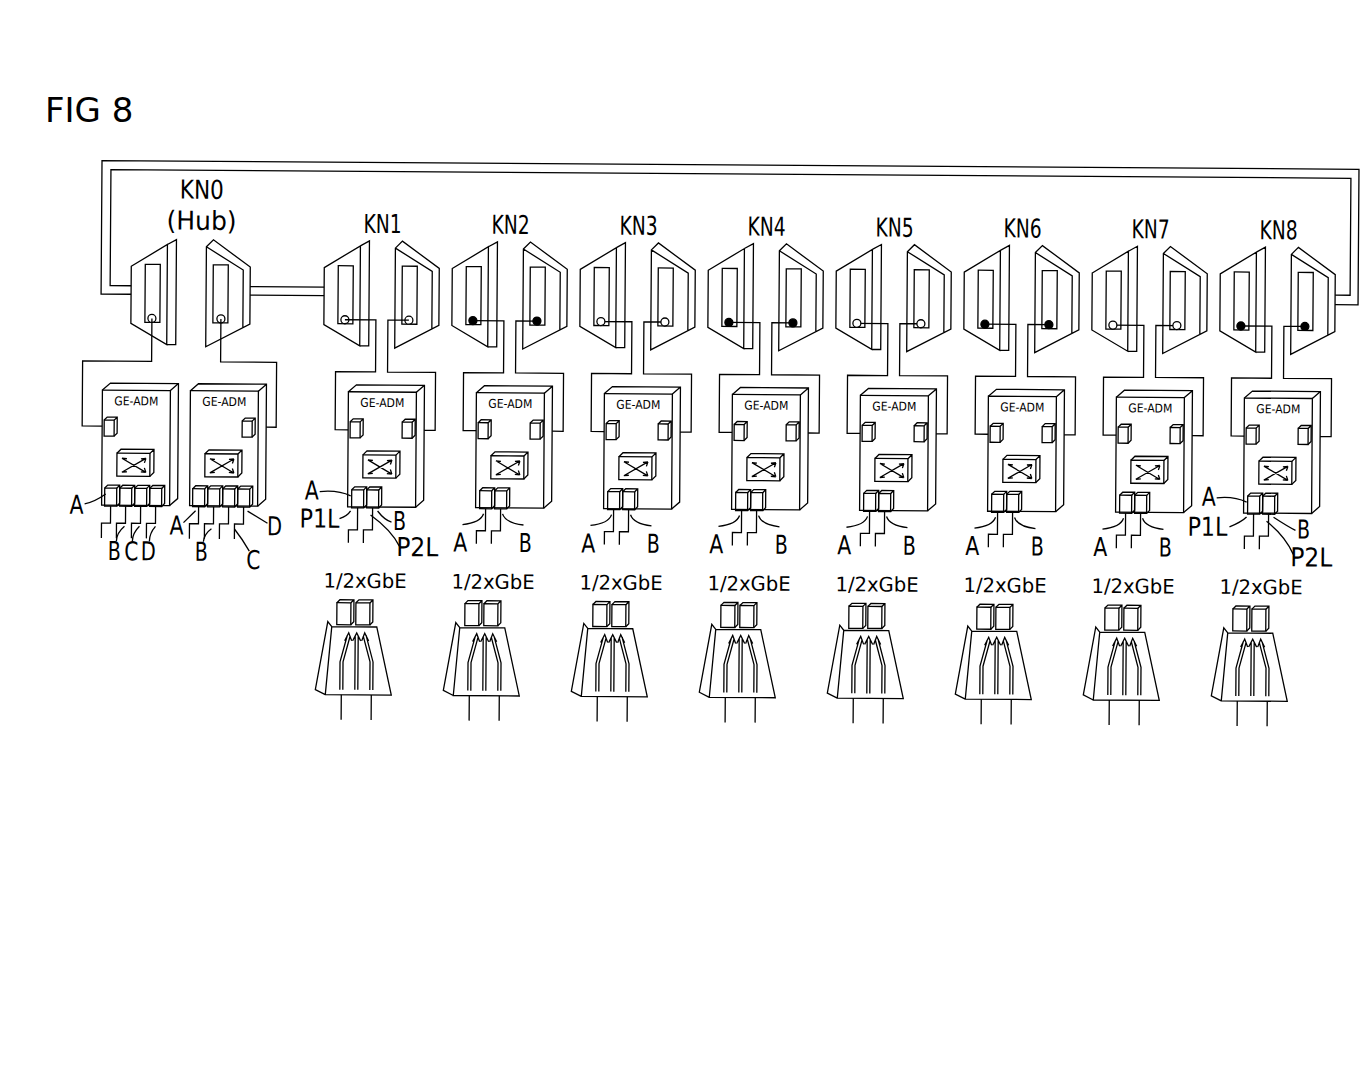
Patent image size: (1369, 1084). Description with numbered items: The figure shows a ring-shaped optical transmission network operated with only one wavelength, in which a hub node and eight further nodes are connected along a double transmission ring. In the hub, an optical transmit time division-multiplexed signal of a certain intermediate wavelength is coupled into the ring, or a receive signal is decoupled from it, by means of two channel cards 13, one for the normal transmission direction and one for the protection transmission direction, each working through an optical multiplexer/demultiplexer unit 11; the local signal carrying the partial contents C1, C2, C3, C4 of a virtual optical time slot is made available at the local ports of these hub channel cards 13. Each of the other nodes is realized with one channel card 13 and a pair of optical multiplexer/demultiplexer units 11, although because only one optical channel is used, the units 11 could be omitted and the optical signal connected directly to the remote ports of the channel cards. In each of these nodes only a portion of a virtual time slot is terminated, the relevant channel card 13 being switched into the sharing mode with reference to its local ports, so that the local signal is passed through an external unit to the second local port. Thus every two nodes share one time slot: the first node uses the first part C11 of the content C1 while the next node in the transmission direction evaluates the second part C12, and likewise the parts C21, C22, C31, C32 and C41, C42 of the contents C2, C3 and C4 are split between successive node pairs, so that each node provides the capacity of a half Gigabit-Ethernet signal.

The optical multiplexer/demultiplexer unit 11 is at (148, 258).
The channel card 13 is at (102, 448).
The partial content of a virtual optical time slot C1 is at (196, 543).
The partial content of a virtual optical time slot C2 is at (213, 551).
The partial content of a virtual optical time slot C3 is at (228, 543).
The partial content of a virtual optical time slot C4 is at (250, 540).
The first part of the content C1 C11 is at (332, 697).
The second part of the content C1 C12 is at (460, 697).
The first part of the content C2 C21 is at (588, 697).
The second part of the content C2 C22 is at (716, 697).
The first part of the content C3 C31 is at (844, 697).
The second part of the content C3 C32 is at (972, 697).
The first part of the content C4 C41 is at (1100, 697).
The second part of the content C4 C42 is at (1228, 697).